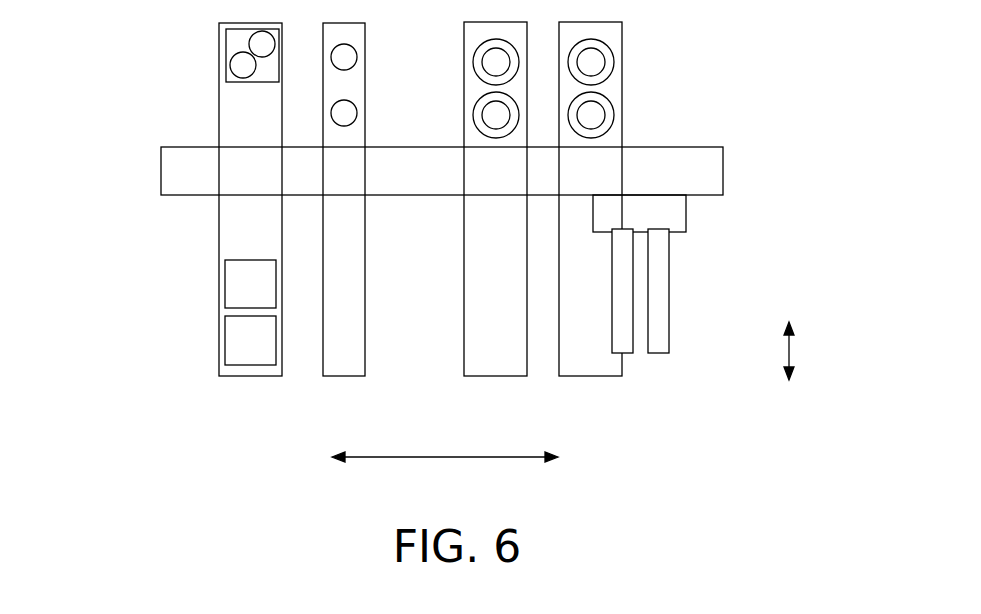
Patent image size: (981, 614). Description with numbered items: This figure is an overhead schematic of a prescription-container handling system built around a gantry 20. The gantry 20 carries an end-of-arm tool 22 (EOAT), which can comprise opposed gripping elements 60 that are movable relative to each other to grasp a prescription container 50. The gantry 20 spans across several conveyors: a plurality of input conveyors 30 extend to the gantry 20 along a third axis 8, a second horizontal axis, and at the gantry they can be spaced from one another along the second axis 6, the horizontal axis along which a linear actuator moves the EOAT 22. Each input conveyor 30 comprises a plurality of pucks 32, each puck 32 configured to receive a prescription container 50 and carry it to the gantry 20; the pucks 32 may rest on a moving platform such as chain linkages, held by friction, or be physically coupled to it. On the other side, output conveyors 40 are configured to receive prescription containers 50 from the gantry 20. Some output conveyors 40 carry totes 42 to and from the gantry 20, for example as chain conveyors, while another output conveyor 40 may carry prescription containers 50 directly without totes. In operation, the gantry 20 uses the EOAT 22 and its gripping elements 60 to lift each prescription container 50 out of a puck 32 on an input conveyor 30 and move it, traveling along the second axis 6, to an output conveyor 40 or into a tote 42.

The gantry 20 is at (712, 173).
The end-of-arm tool 22 is at (686, 226).
The input conveyor 30 is at (466, 68).
The puck 32 is at (473, 115).
The output conveyor 40 is at (247, 232).
The tote 42 is at (233, 73).
The prescription container 50 is at (248, 42).
The gripping element 60 is at (627, 312).
The second axis 6 is at (442, 457).
The third axis 8 is at (789, 348).